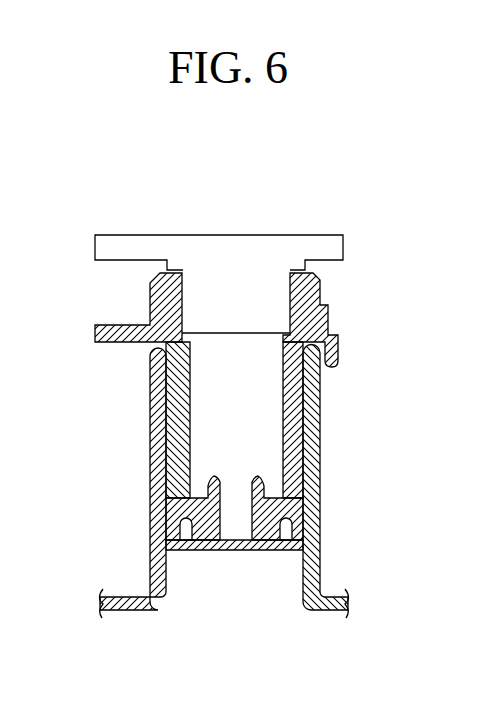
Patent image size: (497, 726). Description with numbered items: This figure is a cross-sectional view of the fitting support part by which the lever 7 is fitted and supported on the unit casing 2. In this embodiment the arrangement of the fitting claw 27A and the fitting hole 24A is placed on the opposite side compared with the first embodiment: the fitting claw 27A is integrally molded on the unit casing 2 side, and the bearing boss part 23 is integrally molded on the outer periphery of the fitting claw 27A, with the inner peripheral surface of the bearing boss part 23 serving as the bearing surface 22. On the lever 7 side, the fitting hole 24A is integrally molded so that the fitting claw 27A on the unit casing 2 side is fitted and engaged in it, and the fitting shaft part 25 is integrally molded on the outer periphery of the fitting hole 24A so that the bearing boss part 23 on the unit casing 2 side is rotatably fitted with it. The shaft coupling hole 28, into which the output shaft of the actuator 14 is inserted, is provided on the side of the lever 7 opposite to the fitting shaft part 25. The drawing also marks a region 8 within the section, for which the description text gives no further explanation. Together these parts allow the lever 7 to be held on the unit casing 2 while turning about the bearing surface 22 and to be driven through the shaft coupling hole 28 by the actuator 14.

The unit casing 2 is at (128, 606).
The lever 7 is at (96, 333).
The insertion opening 8 is at (247, 347).
The actuator 14 is at (217, 262).
The bearing surface 22 is at (178, 402).
The bearing boss part 23 is at (157, 470).
The fitting hole 24A is at (262, 512).
The fitting shaft part 25 is at (293, 400).
The fitting claw 27A is at (231, 522).
The shaft coupling hole 28 is at (287, 298).